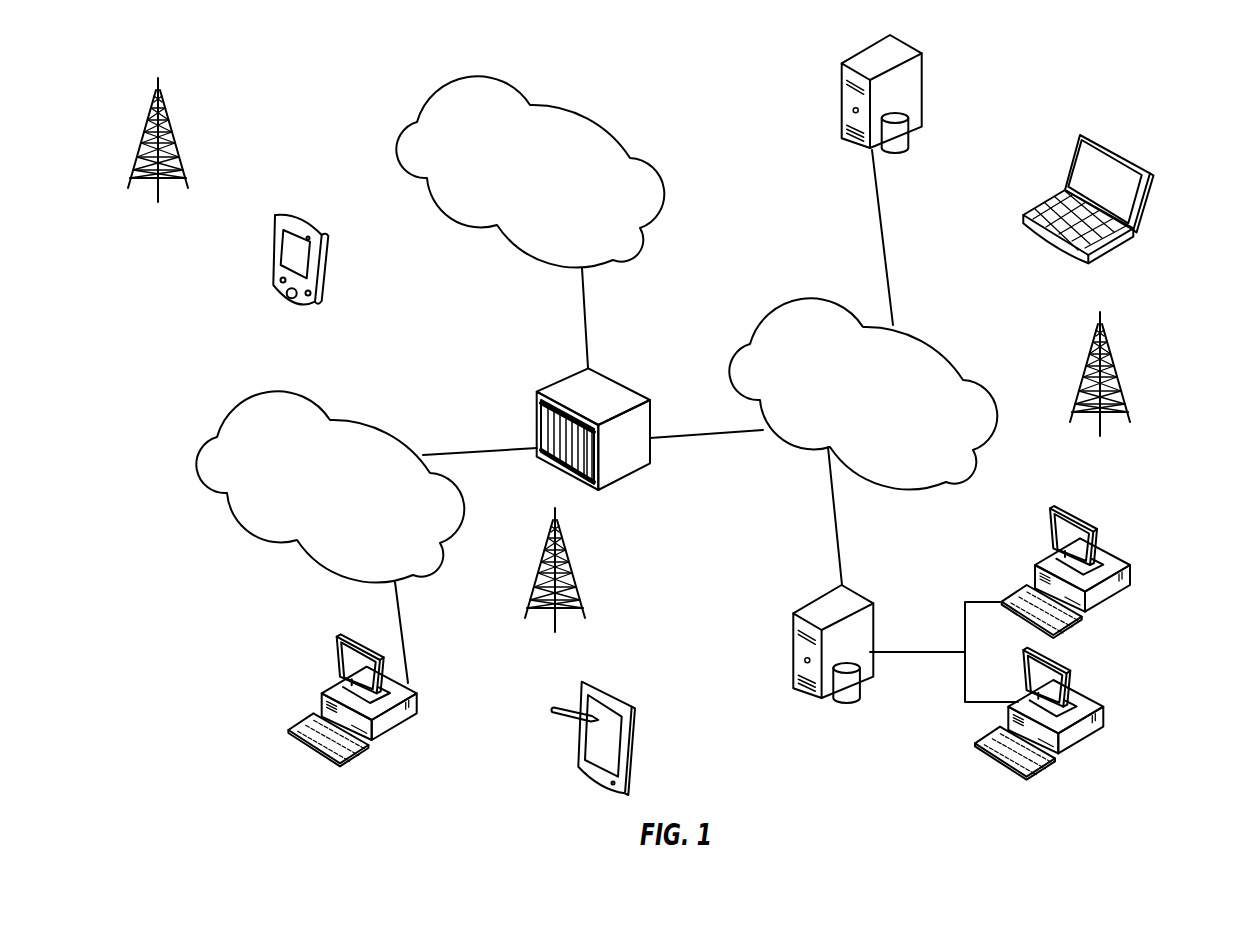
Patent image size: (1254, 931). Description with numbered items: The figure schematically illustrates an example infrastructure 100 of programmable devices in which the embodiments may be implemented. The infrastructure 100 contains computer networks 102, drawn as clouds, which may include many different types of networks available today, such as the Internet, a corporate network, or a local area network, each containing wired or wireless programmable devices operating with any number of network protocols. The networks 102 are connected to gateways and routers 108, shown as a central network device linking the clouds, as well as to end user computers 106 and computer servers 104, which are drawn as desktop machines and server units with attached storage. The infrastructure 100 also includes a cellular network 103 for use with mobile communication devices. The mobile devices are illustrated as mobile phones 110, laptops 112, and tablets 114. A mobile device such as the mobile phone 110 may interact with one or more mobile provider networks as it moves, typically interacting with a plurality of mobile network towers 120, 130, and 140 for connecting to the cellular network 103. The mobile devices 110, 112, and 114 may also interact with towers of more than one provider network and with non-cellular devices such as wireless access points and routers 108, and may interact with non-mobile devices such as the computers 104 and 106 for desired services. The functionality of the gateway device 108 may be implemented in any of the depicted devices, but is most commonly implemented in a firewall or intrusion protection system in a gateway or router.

The infrastructure 100 is at (1010, 122).
The computer networks 102 is at (617, 440).
The cellular network 103 is at (531, 166).
The computer servers 104 is at (805, 368).
The end user computers 106 is at (740, 628).
The gateways and routers 108 is at (619, 412).
The mobile phones 110 is at (334, 238).
The laptops 112 is at (1117, 192).
The tablets 114 is at (627, 723).
The mobile network tower 120 is at (555, 584).
The mobile network tower 130 is at (1100, 387).
The mobile network tower 140 is at (158, 155).